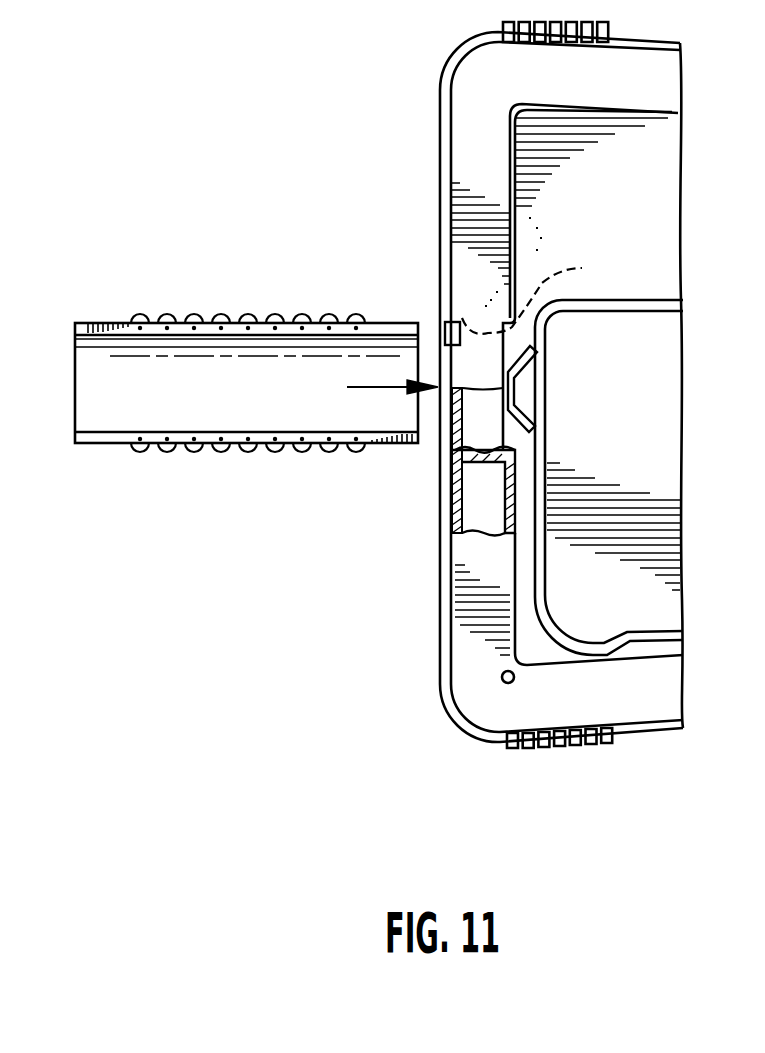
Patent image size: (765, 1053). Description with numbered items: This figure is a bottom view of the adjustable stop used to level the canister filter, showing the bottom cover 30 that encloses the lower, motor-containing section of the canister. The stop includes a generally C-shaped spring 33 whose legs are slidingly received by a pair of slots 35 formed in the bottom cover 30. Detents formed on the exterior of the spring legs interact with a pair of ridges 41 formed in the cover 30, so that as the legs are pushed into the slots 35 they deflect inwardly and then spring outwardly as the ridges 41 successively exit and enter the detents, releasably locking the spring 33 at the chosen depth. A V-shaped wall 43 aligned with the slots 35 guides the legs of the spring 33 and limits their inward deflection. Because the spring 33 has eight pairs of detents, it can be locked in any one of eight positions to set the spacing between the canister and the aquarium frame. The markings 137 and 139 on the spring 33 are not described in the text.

The bottom cover 30 is at (570, 752).
The C-shaped spring 33 is at (249, 382).
The slots 35 is at (450, 330).
The ridges 41 is at (480, 455).
The V-shaped wall 43 is at (505, 383).
The rounded ribs 137 is at (178, 321).
The knurled surface 139 is at (85, 322).